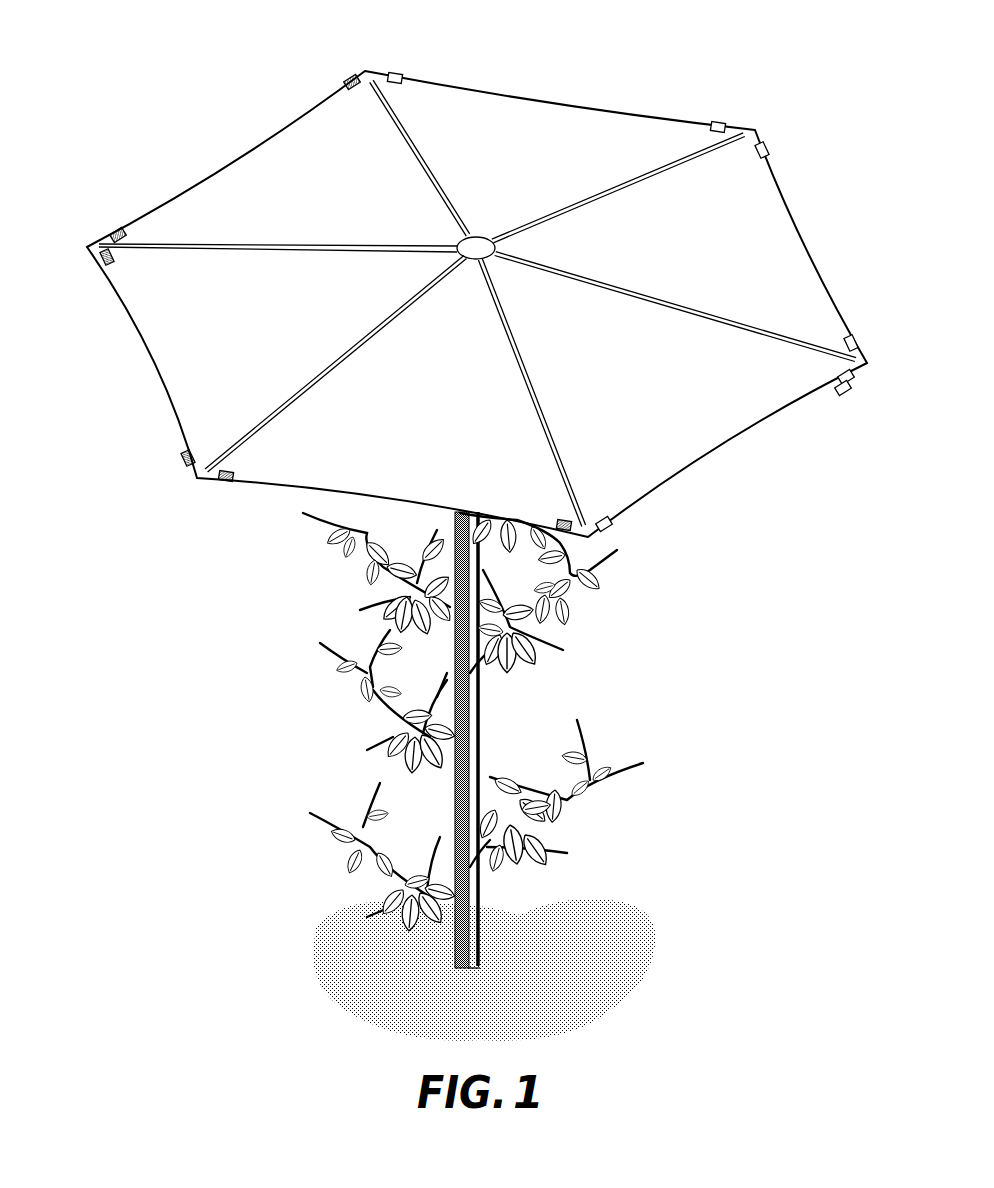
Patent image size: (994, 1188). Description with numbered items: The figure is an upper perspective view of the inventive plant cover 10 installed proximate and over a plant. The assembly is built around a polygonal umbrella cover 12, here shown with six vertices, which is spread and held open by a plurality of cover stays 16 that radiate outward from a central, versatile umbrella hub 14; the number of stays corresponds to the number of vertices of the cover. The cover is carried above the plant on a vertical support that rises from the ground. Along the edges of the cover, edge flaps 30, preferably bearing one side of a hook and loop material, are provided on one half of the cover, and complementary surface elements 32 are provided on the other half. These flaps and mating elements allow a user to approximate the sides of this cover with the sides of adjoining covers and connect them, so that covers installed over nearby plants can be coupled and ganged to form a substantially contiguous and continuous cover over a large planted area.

The plant cover apparatus 10 is at (222, 68).
The polygonal umbrella cover 12 is at (593, 117).
The umbrella hub 14 is at (480, 240).
The cover stays 16 is at (687, 153).
The edge flaps 30 is at (395, 74).
The complementary surface elements 32 is at (344, 80).